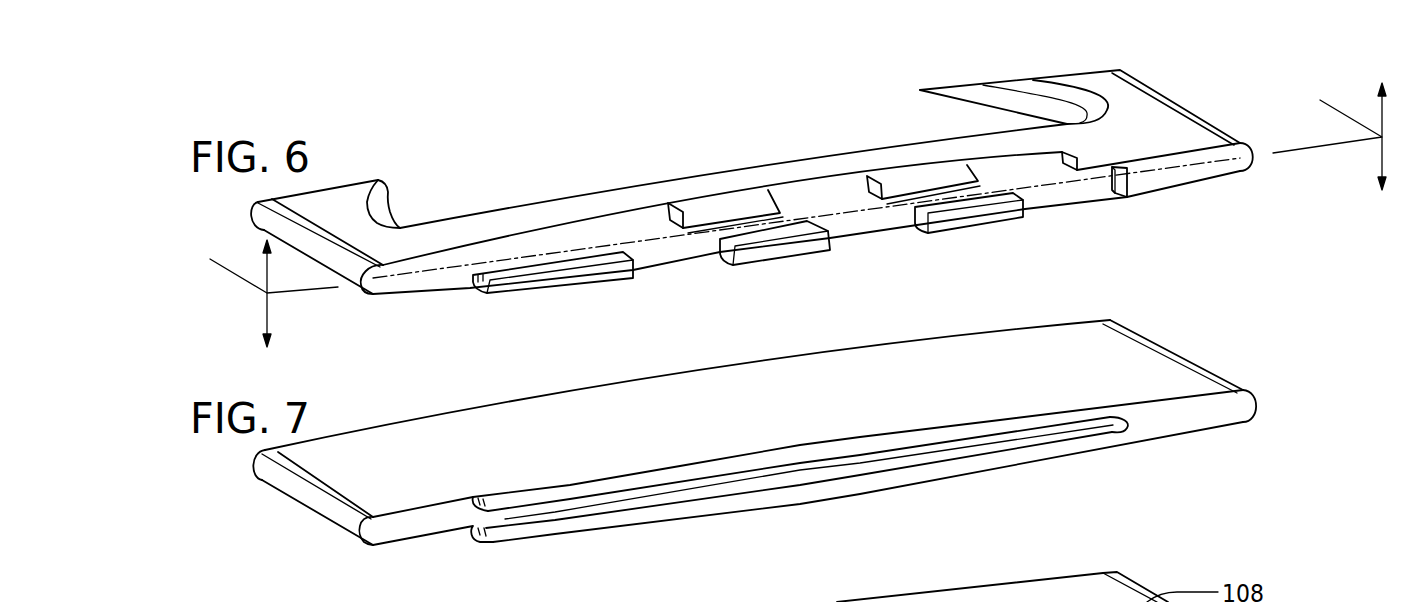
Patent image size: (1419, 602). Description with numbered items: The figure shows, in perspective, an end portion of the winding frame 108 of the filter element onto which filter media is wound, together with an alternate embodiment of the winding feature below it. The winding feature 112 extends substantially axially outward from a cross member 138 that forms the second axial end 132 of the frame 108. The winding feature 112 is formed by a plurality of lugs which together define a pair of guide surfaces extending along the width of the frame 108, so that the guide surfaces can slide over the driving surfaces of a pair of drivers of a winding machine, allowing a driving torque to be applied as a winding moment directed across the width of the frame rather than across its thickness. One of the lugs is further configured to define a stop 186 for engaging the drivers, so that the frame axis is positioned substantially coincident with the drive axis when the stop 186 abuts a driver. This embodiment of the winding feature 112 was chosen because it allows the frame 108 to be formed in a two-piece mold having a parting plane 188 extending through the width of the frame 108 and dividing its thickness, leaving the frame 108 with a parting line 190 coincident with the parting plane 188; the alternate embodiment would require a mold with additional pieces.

In FIG. 6, the winding feature 112 is at (518, 313).
In FIG. 7, the winding feature 112 is at (522, 560).
In FIG. 6, the second axial end 132 is at (407, 284).
In FIG. 7, the second axial end 132 is at (407, 531).
In FIG. 6, the winding frame 108 is at (1123, 97).
In FIG. 7, the winding frame 108 is at (1137, 377).
In FIG. 6, the cross member 138 is at (1100, 143).
In FIG. 6, the stop 186 is at (1102, 186).
In FIG. 6, the parting plane 188 is at (1332, 125).
In FIG. 6, the parting line 190 is at (667, 242).